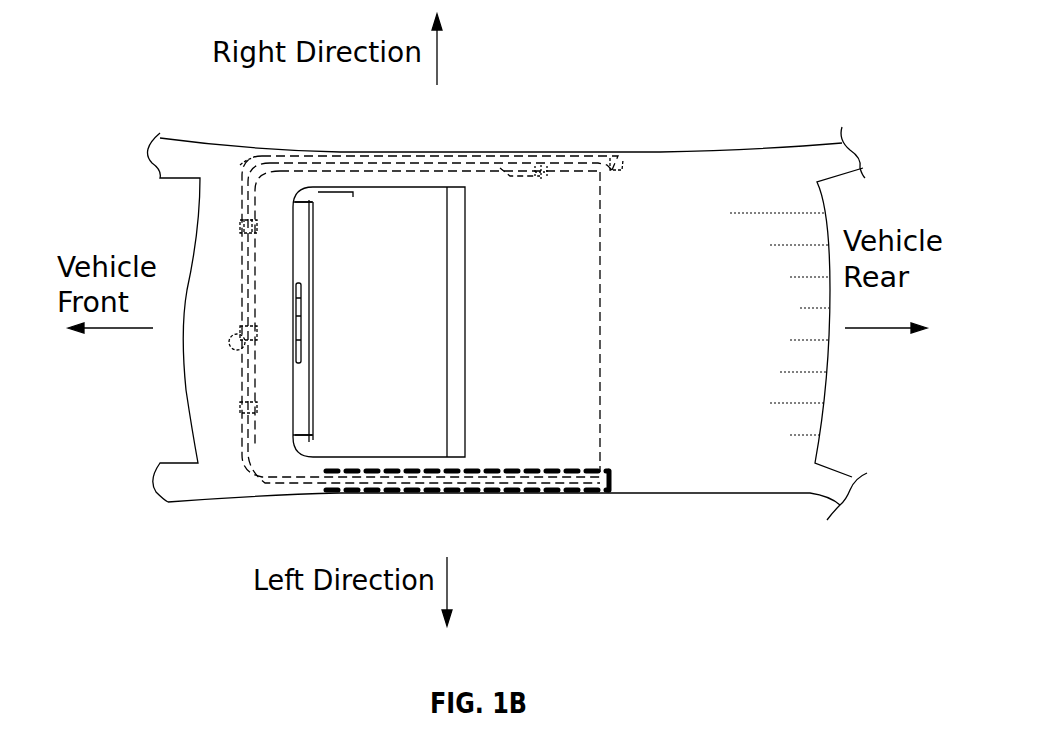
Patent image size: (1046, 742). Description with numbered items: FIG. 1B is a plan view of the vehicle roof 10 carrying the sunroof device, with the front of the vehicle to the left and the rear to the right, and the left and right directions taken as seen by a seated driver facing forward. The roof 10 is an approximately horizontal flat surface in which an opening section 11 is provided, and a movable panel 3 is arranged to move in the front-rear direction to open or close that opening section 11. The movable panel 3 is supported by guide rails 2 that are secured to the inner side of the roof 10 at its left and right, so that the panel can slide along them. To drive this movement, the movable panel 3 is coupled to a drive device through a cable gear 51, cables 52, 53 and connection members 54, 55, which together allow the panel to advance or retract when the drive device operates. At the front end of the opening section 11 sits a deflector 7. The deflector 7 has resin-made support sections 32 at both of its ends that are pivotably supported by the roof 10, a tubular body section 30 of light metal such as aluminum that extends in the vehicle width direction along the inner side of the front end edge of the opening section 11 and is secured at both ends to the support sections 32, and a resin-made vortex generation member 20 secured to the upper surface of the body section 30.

The guide rails 2 is at (623, 155).
The movable panel 3 is at (517, 203).
The deflector 7 is at (320, 386).
The roof 10 is at (690, 194).
The opening section 11 is at (398, 210).
The vortex generation member 20 is at (303, 310).
The body section 30 is at (303, 241).
The support sections 32 is at (307, 192).
The cable gear 51 is at (237, 333).
The cable 52 is at (243, 172).
The cable 53 is at (240, 200).
The connection member 54 is at (561, 470).
The connection member 55 is at (540, 170).